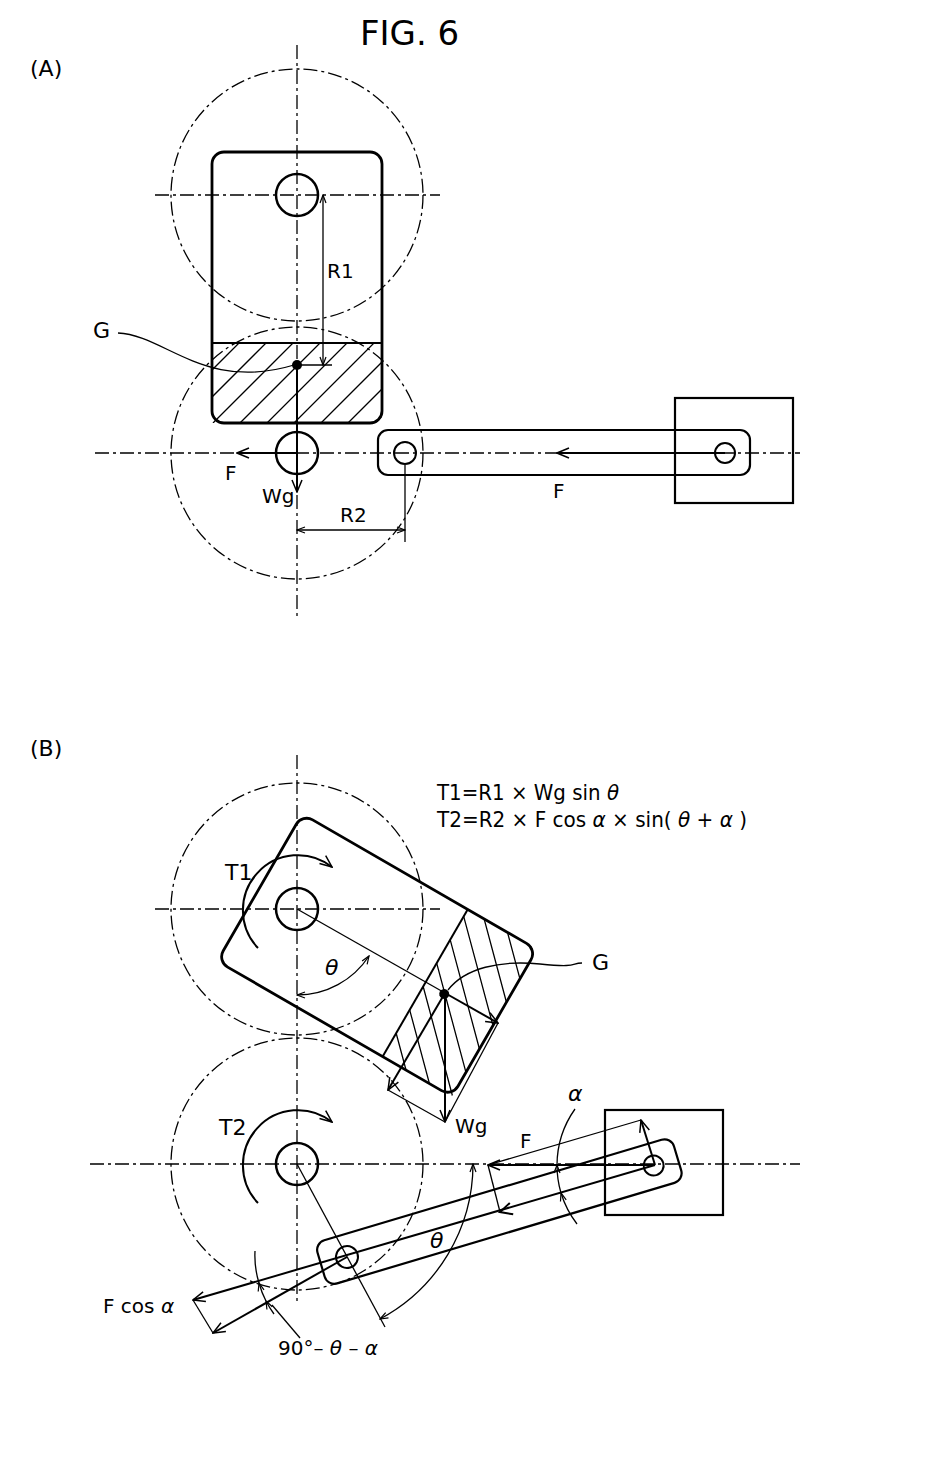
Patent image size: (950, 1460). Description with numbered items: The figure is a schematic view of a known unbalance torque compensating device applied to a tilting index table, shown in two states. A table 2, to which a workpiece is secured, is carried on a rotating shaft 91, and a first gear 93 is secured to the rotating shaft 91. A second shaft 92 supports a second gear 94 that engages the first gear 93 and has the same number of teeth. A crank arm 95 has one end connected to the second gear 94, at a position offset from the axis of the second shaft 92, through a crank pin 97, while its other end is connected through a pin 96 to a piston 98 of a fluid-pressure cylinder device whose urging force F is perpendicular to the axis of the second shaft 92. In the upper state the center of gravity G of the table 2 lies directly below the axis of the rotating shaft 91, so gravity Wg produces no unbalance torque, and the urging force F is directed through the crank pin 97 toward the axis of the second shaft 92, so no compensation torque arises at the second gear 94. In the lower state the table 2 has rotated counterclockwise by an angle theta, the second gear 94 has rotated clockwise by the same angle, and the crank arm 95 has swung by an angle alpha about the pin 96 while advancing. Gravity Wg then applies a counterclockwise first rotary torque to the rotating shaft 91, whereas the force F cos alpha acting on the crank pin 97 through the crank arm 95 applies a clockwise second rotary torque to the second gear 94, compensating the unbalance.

The table 2 is at (383, 317).
The rotating shaft 91 is at (278, 185).
The second shaft 92 is at (280, 462).
The first gear 93 is at (371, 93).
The second gear 94 is at (315, 581).
The crank arm 95 is at (527, 430).
The pin 96 is at (712, 440).
The crank pin 97 is at (405, 443).
The piston 98 is at (695, 503).